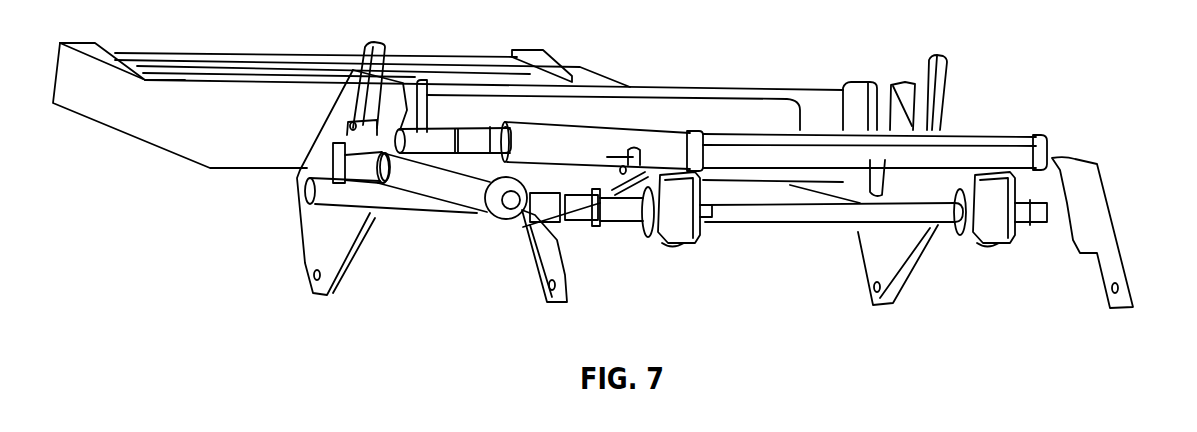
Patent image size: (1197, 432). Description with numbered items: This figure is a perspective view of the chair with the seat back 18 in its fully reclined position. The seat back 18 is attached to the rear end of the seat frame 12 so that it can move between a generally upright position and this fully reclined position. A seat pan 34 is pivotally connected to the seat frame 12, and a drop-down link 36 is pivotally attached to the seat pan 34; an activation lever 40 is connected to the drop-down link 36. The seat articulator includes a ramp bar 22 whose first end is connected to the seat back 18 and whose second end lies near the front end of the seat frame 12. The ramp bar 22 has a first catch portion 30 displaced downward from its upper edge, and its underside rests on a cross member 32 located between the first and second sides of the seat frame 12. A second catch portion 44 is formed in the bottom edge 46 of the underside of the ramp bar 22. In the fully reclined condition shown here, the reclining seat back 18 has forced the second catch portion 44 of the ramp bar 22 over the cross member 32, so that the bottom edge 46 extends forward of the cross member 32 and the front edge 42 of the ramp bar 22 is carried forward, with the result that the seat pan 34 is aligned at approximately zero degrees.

The seat frame 12 is at (317, 233).
The seat back 18 is at (157, 130).
The ramp bar 22 is at (665, 233).
The first catch portion 30 is at (717, 207).
The cross member 32 is at (783, 212).
The seat pan 34 is at (768, 153).
The drop-down link 36 is at (635, 147).
The activation lever 40 is at (623, 157).
The front edge 42 is at (1013, 187).
The second catch portion 44 is at (683, 247).
The bottom edge 46 is at (670, 243).